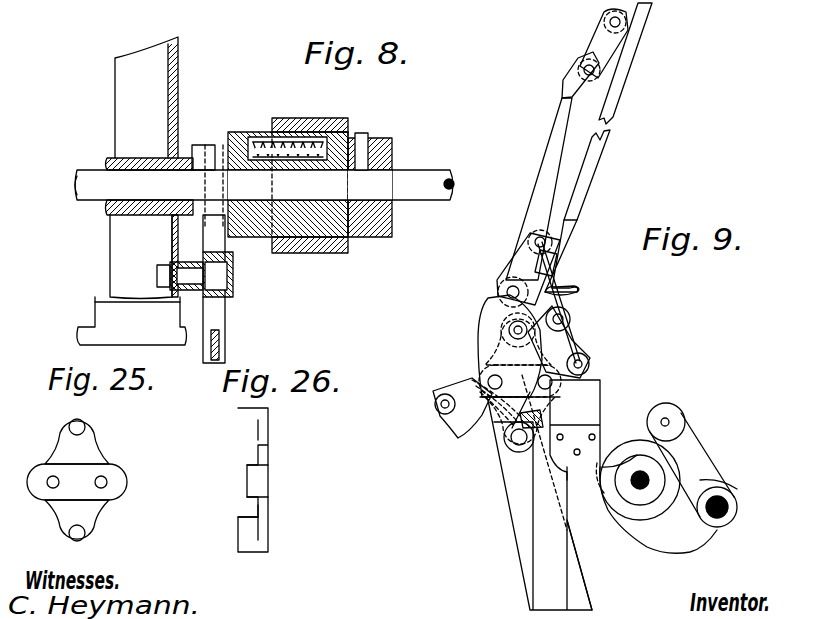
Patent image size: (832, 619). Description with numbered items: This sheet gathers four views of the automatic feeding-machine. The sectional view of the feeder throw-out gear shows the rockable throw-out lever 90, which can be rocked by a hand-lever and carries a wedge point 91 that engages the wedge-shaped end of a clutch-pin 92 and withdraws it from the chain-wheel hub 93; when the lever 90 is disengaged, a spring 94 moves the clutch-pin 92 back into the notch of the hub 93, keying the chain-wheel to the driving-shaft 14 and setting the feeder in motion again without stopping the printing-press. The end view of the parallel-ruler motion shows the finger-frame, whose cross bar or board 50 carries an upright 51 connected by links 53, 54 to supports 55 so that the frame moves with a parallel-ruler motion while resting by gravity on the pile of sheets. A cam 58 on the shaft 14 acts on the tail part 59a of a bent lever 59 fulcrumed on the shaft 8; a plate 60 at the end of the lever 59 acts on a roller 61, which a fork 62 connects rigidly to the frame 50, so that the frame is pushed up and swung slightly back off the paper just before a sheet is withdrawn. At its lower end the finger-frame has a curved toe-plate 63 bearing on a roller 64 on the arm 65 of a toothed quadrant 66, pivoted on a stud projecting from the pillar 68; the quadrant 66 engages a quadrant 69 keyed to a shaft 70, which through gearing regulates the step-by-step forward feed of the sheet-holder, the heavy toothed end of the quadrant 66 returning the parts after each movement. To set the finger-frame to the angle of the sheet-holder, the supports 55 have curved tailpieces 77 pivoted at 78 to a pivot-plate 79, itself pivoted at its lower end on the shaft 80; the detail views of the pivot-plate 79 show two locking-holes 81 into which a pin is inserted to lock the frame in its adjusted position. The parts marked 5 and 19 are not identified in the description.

In FIG. 8, the driving-shaft 14 is at (421, 186).
In FIG. 8, the throw-out lever 90 is at (215, 316).
In FIG. 8, the wedge point 91 is at (213, 188).
In FIG. 8, the clutch-pin 92 is at (236, 165).
In FIG. 8, the chain-wheel hub 93 is at (373, 226).
In FIG. 8, the spring 94 is at (323, 146).
In FIG. 25, the pivot 78 is at (83, 428).
In FIG. 26, the pivot 78 is at (240, 428).
In FIG. 9, the pivot 78 is at (510, 328).
In FIG. 25, the pivot-plate 79 is at (78, 508).
In FIG. 26, the pivot-plate 79 is at (260, 505).
In FIG. 9, the pivot-plate 79 is at (545, 378).
In FIG. 25, the locking-holes 81 is at (105, 483).
In FIG. 9, the locking-holes 81 is at (470, 368).
In FIG. 9, the upright 51 is at (585, 177).
In FIG. 9, the link 53 is at (603, 48).
In FIG. 9, the support 55 is at (547, 168).
In FIG. 9, the link 54 is at (530, 263).
In FIG. 9, the cross bar 50 is at (562, 268).
In FIG. 9, the curved toe-plate 63 is at (565, 297).
In FIG. 9, the roller 64 is at (570, 317).
In FIG. 9, the arm 65 is at (560, 347).
In FIG. 9, the fork 62 is at (550, 343).
In FIG. 9, the roller 61 is at (590, 362).
In FIG. 9, the curved tailpiece 77 is at (530, 313).
In FIG. 9, the shaft 70 is at (438, 402).
In FIG. 9, the quadrant 69 is at (462, 420).
In FIG. 9, the toothed quadrant 66 is at (492, 417).
In FIG. 9, the shaft 80 is at (520, 437).
In FIG. 9, the pillar 68 is at (548, 520).
In FIG. 9, the frame 5 is at (580, 592).
In FIG. 9, the plate 60 is at (575, 430).
In FIG. 9, the bent lever 59 is at (657, 538).
In FIG. 9, the tail part 59a is at (720, 481).
In FIG. 9, the shaft 19 is at (640, 470).
In FIG. 9, the cam 58 is at (667, 462).
In FIG. 9, the shaft 8 is at (717, 527).